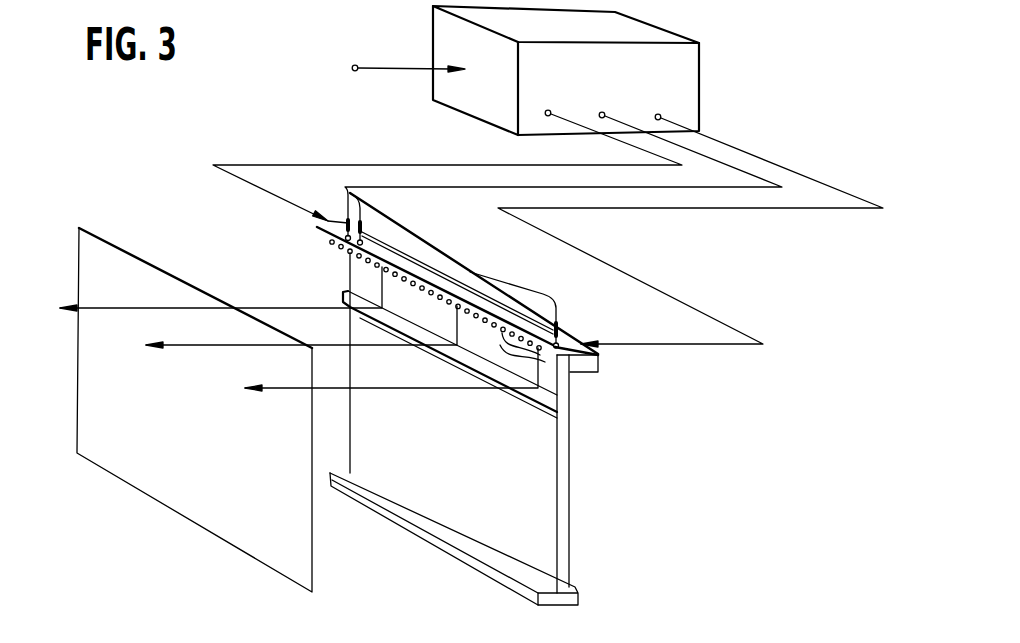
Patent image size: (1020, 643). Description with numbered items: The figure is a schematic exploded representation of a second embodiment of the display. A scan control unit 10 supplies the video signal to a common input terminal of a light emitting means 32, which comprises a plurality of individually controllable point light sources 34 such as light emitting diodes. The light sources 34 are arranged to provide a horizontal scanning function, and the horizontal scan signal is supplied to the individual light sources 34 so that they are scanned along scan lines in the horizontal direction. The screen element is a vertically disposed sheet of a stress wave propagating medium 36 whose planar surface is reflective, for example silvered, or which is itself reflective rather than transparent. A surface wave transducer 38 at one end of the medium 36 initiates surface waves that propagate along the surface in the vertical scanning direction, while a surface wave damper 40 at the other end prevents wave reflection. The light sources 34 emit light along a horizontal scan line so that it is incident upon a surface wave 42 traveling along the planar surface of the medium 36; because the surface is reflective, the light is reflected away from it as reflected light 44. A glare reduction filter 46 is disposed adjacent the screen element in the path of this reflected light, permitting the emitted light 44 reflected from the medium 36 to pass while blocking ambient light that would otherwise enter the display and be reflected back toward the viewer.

The scan control unit 10 is at (665, 30).
The light emitting means 32 is at (460, 292).
The point light sources 34 is at (383, 268).
The stress wave propagating medium 36 is at (565, 478).
The surface wave transducer 38 is at (600, 364).
The surface wave damper 40 is at (578, 600).
The surface wave 42 is at (540, 407).
The reflected light 44 is at (425, 392).
The glare reduction filter 46 is at (190, 513).